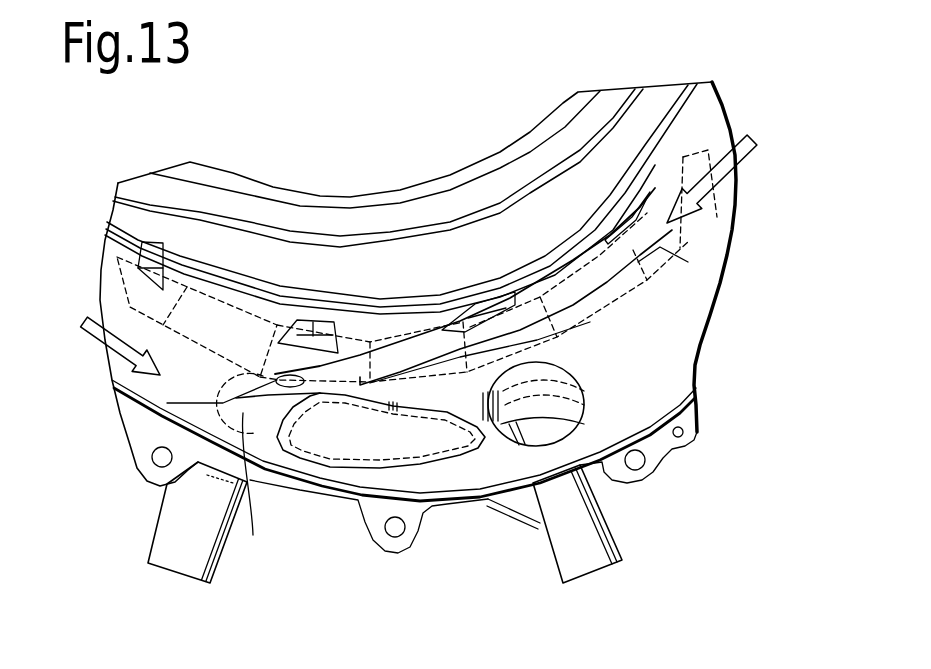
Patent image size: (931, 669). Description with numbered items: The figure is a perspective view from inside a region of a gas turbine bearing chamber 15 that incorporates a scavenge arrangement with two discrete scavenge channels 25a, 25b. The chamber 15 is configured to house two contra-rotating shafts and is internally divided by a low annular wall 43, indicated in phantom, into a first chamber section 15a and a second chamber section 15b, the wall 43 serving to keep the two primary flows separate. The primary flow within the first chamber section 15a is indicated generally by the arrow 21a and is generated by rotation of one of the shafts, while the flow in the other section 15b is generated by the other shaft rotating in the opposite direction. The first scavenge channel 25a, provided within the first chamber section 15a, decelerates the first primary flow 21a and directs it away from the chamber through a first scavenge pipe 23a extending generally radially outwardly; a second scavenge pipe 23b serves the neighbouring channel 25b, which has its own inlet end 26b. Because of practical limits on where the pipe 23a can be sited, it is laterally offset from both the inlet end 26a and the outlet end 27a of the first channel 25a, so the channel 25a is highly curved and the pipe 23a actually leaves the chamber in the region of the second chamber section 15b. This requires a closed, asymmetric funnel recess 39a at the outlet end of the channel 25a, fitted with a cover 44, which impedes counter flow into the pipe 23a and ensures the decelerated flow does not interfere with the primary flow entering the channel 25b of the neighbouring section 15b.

The chamber 15 is at (521, 112).
The first chamber section 15a is at (658, 102).
The second chamber section 15b is at (650, 370).
The first primary flow 21a is at (747, 153).
The first scavenge pipe 23a is at (177, 573).
The second scavenge pipe 23b is at (593, 572).
The first scavenge channel 25a is at (450, 362).
The second scavenge channel 25b is at (343, 462).
The inlet end 26a is at (667, 247).
The inlet end 26b is at (92, 310).
The outlet end 27a is at (167, 403).
The funnel recess 39a is at (200, 415).
The low annular wall 43 is at (328, 335).
The cover 44 is at (248, 500).